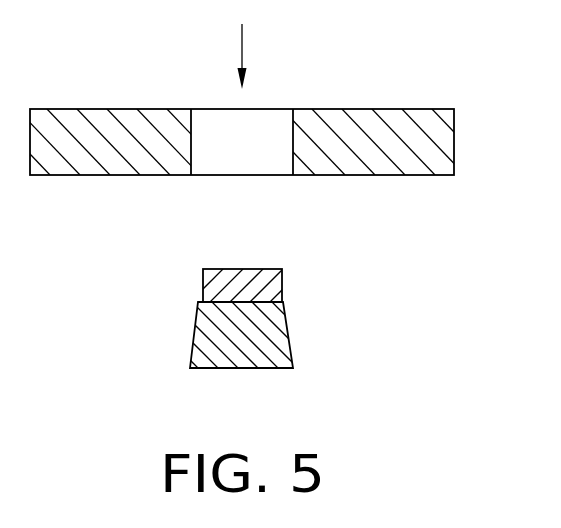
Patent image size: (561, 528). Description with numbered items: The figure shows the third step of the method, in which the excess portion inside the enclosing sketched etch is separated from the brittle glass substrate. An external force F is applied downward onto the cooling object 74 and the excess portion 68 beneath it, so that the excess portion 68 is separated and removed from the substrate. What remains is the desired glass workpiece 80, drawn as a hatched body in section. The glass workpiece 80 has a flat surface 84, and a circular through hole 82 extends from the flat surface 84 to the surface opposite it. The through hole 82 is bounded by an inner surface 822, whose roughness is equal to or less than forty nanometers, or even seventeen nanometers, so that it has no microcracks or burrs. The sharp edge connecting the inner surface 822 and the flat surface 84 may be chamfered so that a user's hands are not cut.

The glass workpiece 80 is at (344, 78).
The flat surface 84 is at (418, 109).
The through hole 82 is at (263, 155).
The inner surface 822 is at (191, 148).
The cooling object 74 is at (215, 277).
The excess portion 68 is at (210, 327).